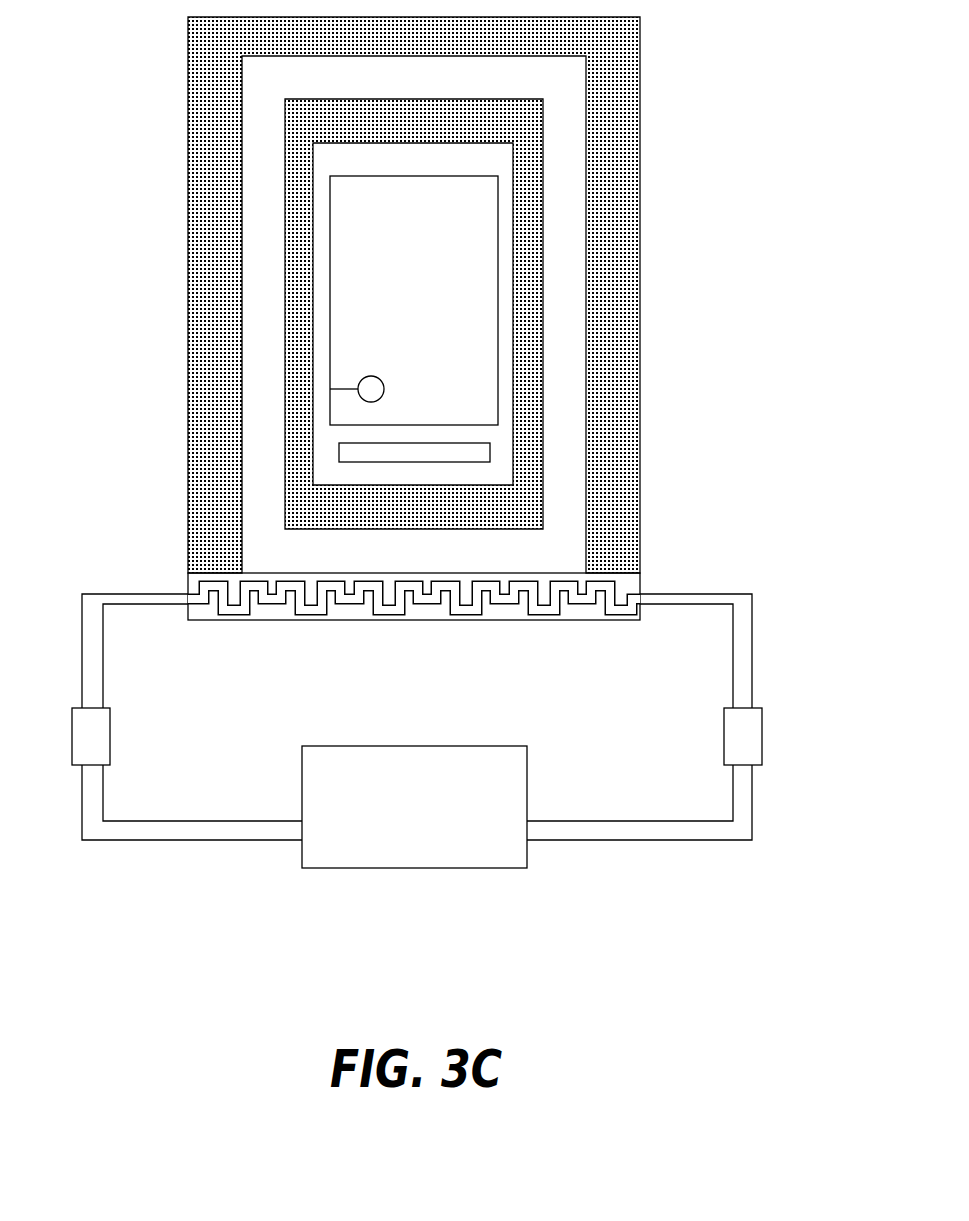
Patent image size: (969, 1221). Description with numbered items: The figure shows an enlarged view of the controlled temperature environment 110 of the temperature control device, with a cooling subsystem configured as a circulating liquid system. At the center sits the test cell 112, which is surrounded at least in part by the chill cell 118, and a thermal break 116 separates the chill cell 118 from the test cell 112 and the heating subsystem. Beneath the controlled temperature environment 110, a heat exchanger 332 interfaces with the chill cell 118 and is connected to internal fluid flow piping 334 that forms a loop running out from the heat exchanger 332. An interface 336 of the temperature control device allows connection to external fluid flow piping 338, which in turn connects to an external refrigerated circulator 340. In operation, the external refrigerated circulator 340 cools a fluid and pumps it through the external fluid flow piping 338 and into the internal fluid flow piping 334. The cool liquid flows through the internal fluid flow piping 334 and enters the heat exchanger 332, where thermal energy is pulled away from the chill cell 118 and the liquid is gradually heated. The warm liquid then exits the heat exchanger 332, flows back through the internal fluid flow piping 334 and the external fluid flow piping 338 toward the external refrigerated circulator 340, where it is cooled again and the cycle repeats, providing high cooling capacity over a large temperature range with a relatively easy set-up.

The controlled temperature environment 110 is at (379, 295).
The test cell 112 is at (473, 252).
The thermal break 116 is at (528, 357).
The chill cell 118 is at (563, 458).
The heat exchanger 332 is at (642, 583).
The internal fluid flow piping 334 is at (743, 648).
The interface 336 is at (750, 733).
The external fluid flow piping 338 is at (228, 830).
The external refrigerated circulator 340 is at (467, 860).